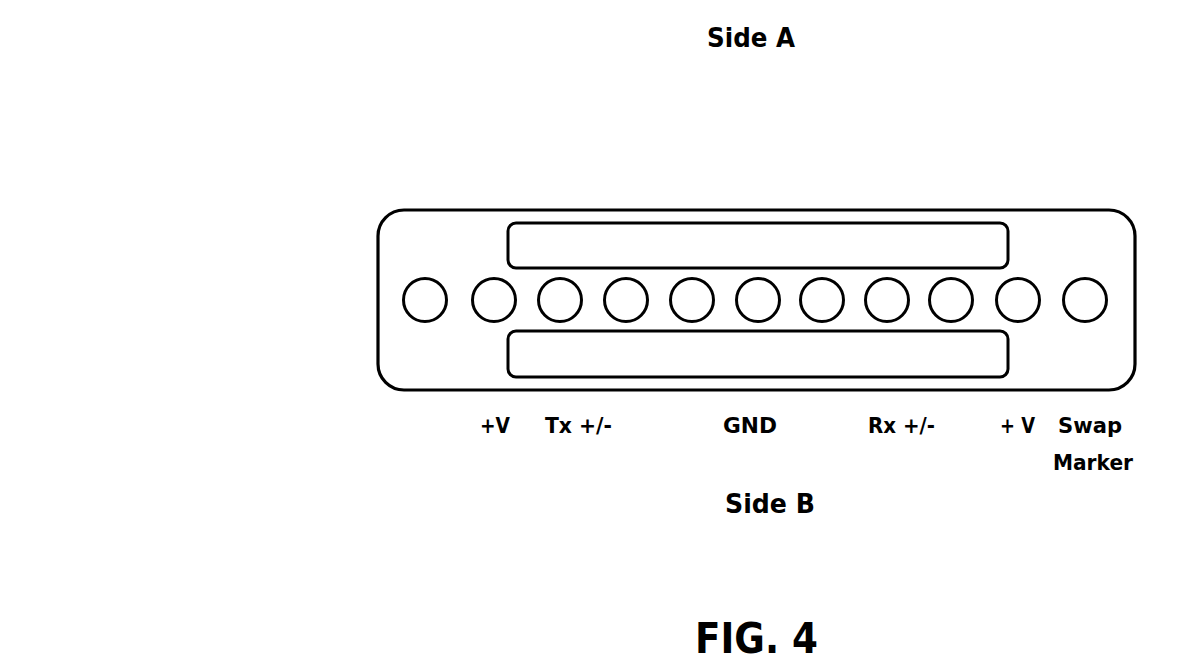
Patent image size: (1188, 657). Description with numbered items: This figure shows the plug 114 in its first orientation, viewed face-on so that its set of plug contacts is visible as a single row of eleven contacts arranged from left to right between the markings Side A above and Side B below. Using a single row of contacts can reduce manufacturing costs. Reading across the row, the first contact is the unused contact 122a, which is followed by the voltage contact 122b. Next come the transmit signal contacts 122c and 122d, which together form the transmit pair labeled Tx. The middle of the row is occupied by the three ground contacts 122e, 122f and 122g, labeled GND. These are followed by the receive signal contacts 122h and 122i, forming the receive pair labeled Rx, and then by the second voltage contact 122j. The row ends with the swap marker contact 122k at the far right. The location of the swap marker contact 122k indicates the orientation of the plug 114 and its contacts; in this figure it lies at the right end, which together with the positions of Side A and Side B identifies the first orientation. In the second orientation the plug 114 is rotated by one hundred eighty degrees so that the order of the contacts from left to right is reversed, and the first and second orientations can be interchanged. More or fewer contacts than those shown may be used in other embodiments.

The plug 114 is at (377, 302).
The unused contact 122a is at (420, 278).
The voltage contact 122b is at (492, 278).
The transmit signal contact 122c is at (570, 278).
The transmit signal contact 122d is at (640, 278).
The ground contact 122e is at (668, 278).
The ground contact 122f is at (767, 278).
The ground contact 122g is at (822, 278).
The receive signal contact 122h is at (902, 278).
The receive signal contact 122i is at (960, 278).
The voltage contact 122j is at (1021, 278).
The swap marker contact 122k is at (1090, 278).